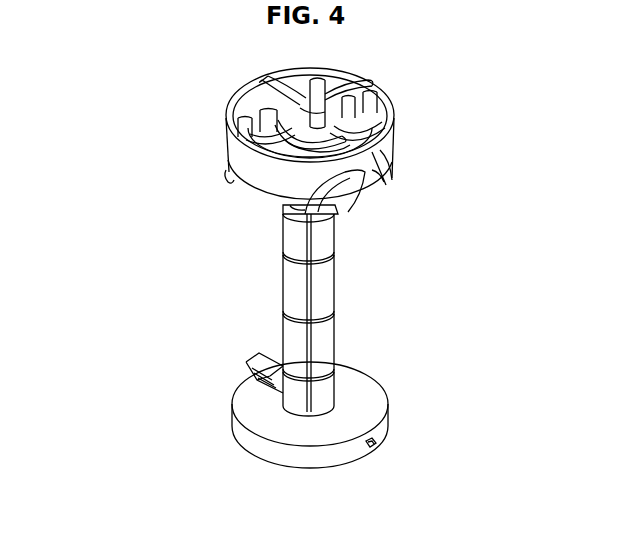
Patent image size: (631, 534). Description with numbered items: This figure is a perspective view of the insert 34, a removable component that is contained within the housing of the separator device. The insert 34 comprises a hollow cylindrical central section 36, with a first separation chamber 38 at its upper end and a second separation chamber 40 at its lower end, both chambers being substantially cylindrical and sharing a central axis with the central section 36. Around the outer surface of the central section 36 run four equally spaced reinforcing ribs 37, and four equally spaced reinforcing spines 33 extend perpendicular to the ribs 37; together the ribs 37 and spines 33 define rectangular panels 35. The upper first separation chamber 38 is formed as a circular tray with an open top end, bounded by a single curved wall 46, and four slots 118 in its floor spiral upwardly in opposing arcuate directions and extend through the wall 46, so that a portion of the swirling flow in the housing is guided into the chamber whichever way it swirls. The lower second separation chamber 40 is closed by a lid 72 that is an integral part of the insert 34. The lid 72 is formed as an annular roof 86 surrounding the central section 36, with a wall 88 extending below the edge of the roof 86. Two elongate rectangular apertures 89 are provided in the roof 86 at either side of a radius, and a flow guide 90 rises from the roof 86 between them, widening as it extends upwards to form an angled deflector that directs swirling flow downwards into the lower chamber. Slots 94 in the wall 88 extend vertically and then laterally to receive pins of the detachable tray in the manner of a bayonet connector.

The insert 34 is at (527, 72).
The curved wall 46 is at (223, 143).
The first separation chamber 38 is at (400, 115).
The slots 118 is at (333, 203).
The reinforcing spines 33 is at (305, 287).
The central section 36 is at (332, 272).
The rectangular panels 35 is at (332, 298).
The reinforcing ribs 37 is at (332, 317).
The second separation chamber 40 is at (367, 383).
The lid 72 is at (345, 413).
The annular roof 86 is at (240, 407).
The wall 88 is at (238, 438).
The apertures 89 is at (259, 384).
The flow guide 90 is at (255, 358).
The slots 94 is at (363, 453).